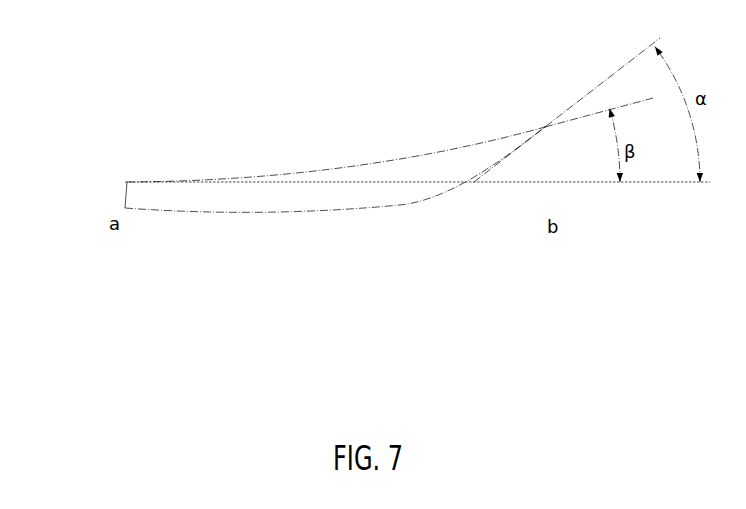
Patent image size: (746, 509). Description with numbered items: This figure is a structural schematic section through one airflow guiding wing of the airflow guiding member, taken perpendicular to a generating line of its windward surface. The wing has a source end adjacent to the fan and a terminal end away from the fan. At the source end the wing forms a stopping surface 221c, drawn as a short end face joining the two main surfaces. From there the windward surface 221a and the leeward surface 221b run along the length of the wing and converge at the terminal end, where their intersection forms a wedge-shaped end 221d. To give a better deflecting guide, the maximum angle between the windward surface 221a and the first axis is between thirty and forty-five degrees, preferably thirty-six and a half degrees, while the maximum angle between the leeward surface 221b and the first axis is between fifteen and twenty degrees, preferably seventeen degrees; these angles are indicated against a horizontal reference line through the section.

The windward surface 221a is at (395, 164).
The leeward surface 221b is at (340, 211).
The stopping surface 221c is at (125, 191).
The wedge-shaped end 221d is at (545, 127).